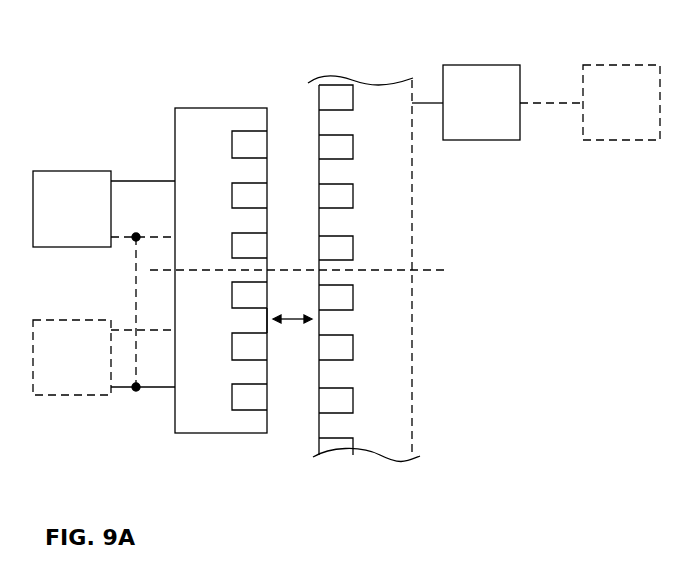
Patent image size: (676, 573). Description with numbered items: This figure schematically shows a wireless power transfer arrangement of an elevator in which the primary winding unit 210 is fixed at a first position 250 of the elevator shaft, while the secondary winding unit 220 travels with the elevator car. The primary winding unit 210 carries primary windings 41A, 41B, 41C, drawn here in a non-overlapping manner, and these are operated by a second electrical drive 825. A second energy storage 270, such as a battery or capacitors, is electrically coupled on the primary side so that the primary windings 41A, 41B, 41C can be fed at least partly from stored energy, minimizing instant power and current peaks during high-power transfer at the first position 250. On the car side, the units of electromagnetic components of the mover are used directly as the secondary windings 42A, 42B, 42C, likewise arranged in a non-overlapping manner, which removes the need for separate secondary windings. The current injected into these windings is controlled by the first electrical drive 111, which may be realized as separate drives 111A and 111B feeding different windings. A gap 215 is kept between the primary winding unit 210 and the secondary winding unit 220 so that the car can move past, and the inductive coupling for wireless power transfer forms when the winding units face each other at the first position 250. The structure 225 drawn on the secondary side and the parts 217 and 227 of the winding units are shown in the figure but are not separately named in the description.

The first electrical drive 111 is at (52, 205).
The electrical drive 111A is at (45, 233).
The electrical drive 111B is at (45, 368).
The second electrical drive 825 is at (462, 115).
The second energy storage 270 is at (601, 115).
The secondary winding unit 220 is at (256, 86).
The tray wall 225 is at (183, 129).
The secondary winding 42A is at (247, 147).
The secondary winding 42B is at (243, 250).
The secondary winding 42C is at (243, 346).
The partition 227 is at (258, 375).
The second tray body 217 is at (330, 226).
The primary winding 41A is at (337, 147).
The primary winding 41B is at (337, 245).
The primary winding 41C is at (343, 347).
The gap 215 is at (405, 178).
The first position 250 is at (433, 270).
The primary winding unit 210 is at (305, 448).